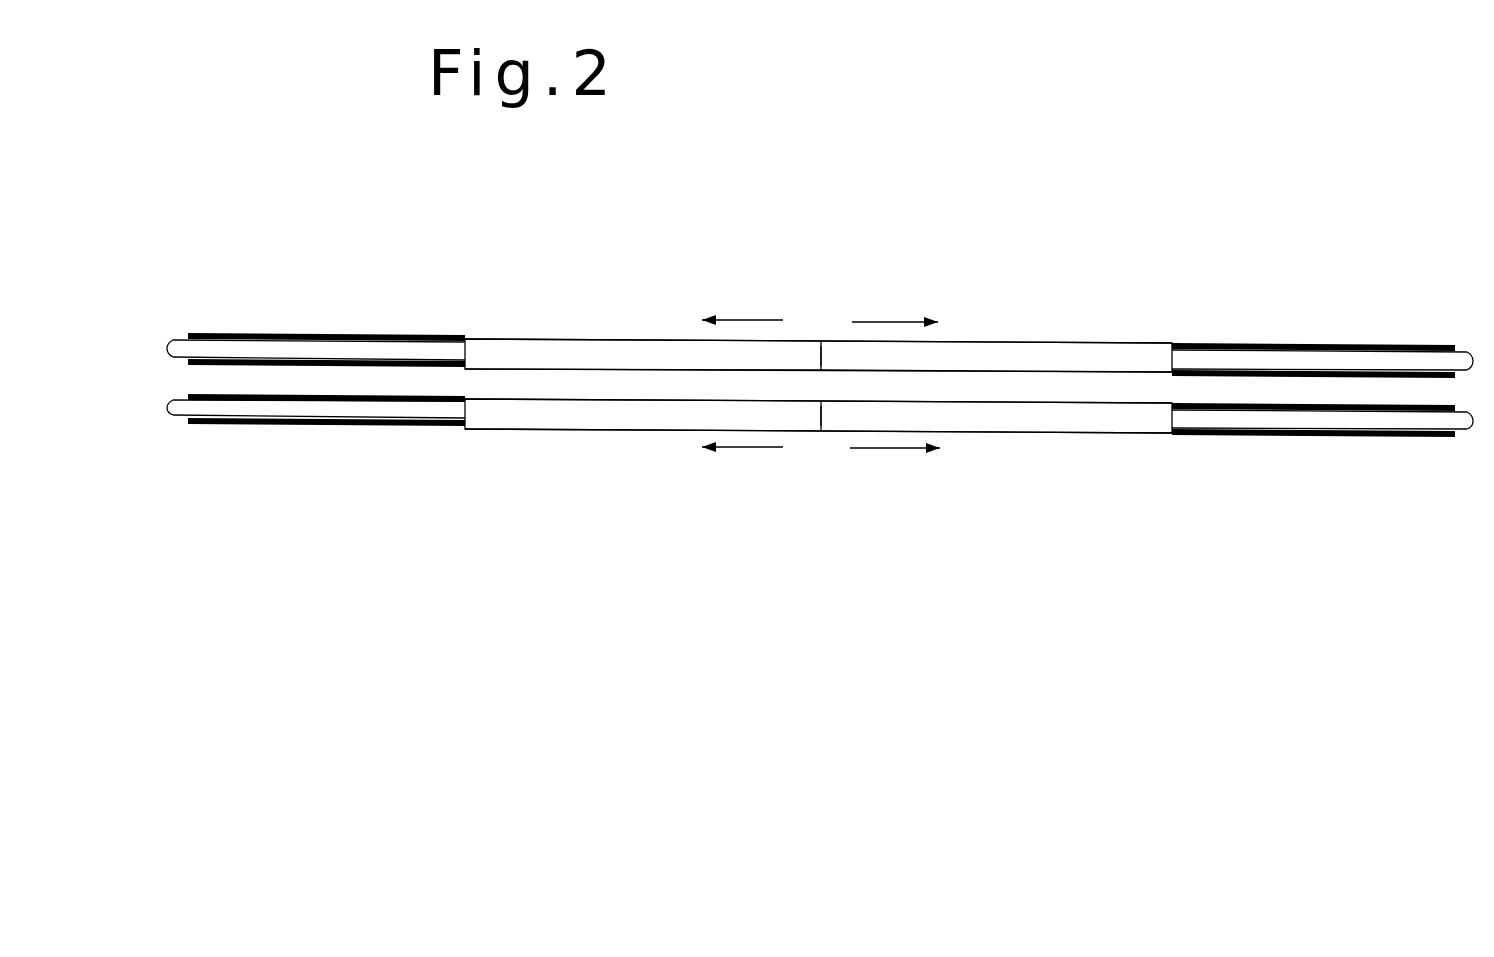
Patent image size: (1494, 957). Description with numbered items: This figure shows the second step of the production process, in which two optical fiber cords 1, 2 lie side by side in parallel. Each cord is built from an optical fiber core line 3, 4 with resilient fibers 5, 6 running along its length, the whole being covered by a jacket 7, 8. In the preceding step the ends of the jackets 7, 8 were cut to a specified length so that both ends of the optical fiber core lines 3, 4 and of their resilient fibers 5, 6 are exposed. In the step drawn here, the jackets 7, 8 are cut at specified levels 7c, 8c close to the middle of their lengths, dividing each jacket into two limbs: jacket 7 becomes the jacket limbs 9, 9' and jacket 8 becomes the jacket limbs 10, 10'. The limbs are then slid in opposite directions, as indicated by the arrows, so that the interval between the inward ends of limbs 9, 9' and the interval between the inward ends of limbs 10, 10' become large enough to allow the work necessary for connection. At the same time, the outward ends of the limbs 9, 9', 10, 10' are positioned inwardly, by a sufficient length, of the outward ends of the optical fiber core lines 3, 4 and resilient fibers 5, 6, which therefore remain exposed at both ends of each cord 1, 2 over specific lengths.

The optical fiber cord 1 is at (989, 338).
The optical fiber cord 2 is at (963, 440).
The optical fiber core line 3 is at (290, 340).
The optical fiber core line 4 is at (290, 422).
The resilient fiber 5 is at (402, 338).
The resilient fiber 6 is at (400, 422).
The jacket 7 is at (787, 340).
The cutting level 7c is at (821, 355).
The jacket 8 is at (800, 434).
The cutting level 8c is at (821, 415).
The jacket limb 9 is at (643, 307).
The jacket limb 9' is at (996, 303).
The jacket limb 10 is at (643, 483).
The jacket limb 10' is at (996, 493).